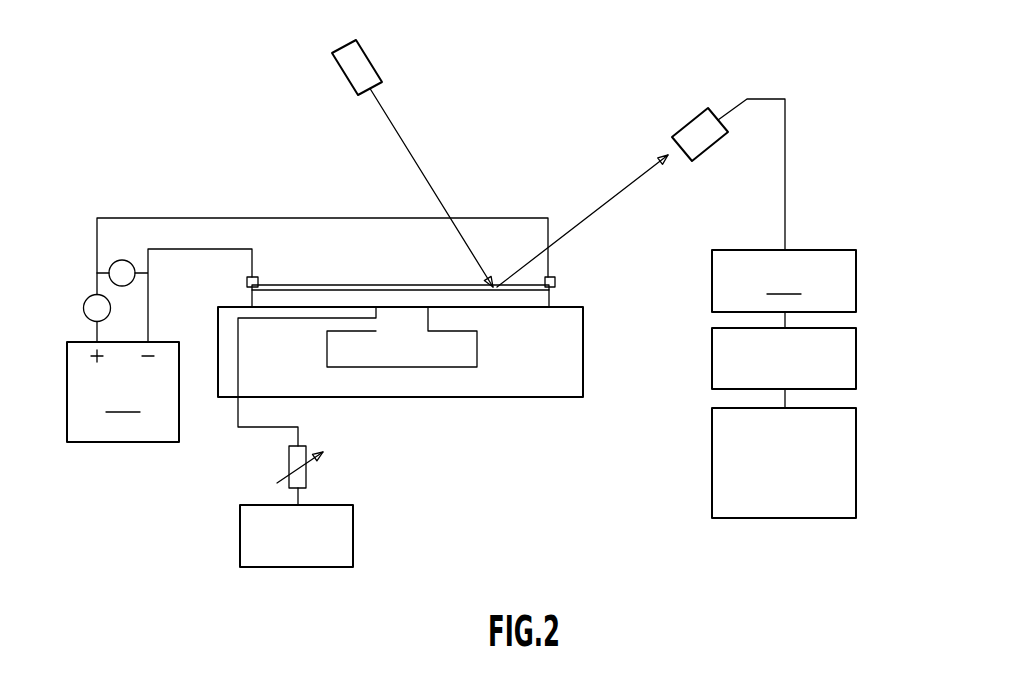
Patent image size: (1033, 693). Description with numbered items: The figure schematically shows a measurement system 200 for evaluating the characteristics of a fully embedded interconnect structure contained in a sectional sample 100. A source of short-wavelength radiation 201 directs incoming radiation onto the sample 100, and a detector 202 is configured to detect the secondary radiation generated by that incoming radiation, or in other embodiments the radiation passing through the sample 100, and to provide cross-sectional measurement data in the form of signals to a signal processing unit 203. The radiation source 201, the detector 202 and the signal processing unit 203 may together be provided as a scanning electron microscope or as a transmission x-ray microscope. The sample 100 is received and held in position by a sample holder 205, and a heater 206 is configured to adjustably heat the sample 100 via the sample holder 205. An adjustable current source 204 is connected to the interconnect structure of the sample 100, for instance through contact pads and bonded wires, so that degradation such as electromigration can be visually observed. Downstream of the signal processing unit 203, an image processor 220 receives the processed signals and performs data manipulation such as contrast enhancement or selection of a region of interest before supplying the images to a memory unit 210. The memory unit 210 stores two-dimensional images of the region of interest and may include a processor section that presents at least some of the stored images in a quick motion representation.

The system 200 is at (150, 73).
The source of short-wavelength radiation 201 is at (368, 53).
The detector 202 is at (677, 128).
The signal processing unit 203 is at (784, 289).
The image processor 220 is at (712, 345).
The memory unit 210 is at (712, 420).
The sample 100 is at (555, 290).
The sample holder 205 is at (556, 397).
The adjustable current source 204 is at (307, 330).
The heater 206 is at (293, 567).